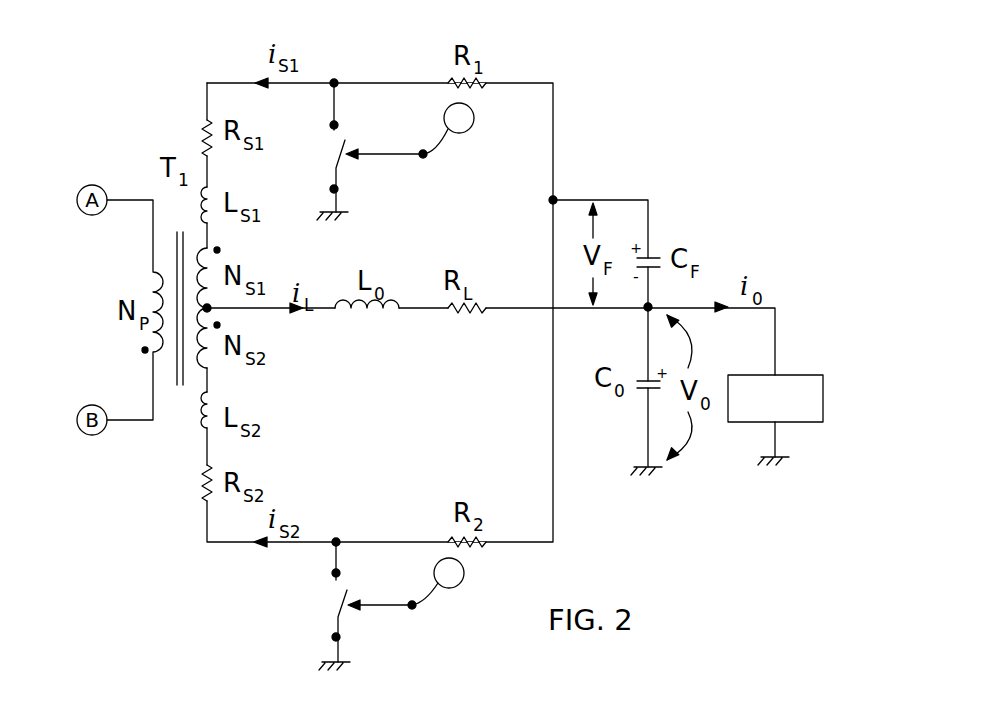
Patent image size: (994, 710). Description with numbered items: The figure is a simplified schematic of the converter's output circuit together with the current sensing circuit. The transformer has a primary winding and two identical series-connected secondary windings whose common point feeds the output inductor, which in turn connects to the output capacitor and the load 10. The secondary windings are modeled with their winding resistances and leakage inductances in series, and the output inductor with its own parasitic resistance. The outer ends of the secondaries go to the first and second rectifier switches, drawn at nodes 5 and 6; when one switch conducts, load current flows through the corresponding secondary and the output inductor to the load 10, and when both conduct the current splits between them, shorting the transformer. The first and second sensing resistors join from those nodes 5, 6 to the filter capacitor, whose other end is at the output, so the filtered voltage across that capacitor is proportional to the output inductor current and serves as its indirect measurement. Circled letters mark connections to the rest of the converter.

The first switch S1 5 is at (337, 82).
The second switch S2 6 is at (339, 541).
The load 10 is at (803, 375).